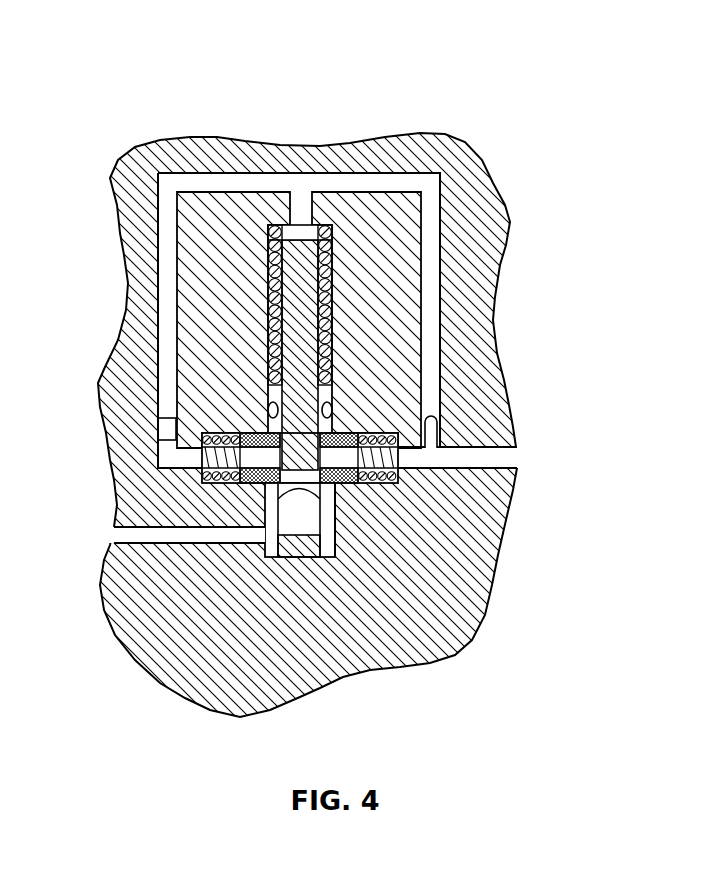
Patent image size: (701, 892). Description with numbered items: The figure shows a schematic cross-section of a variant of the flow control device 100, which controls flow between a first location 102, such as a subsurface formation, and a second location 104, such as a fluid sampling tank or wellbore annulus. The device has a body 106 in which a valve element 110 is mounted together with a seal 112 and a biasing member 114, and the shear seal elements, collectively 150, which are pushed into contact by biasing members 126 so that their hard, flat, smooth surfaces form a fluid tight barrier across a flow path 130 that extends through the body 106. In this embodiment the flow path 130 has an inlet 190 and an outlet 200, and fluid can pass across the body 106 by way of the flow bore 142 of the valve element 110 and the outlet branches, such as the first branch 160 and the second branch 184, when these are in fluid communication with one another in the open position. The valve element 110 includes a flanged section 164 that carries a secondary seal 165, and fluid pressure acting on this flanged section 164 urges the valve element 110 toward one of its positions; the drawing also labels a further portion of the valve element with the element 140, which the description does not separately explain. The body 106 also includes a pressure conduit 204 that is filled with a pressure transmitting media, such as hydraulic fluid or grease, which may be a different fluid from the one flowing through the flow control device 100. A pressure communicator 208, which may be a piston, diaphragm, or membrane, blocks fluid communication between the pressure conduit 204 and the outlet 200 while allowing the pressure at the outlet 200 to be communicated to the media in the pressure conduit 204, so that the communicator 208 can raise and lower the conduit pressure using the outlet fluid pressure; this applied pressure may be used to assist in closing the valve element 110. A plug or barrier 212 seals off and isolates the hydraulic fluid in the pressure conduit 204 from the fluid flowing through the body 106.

The flow control device 100 is at (470, 88).
The first location 102 is at (105, 532).
The second location 104 is at (523, 458).
The body 106 is at (493, 234).
The valve element 110 is at (268, 393).
The seal 112 is at (270, 412).
The biasing member 114 is at (267, 252).
The biasing members 126 is at (378, 436).
The flow path 130 is at (293, 503).
The plunger 140 is at (316, 398).
The flow bore 142 is at (265, 575).
The shear seal elements 150 is at (405, 477).
The first branch 160 is at (425, 460).
The flanged section 164 is at (332, 562).
The secondary seal 165 is at (337, 537).
The second branch 184 is at (255, 180).
The inlet 190 is at (147, 537).
The outlet 200 is at (583, 478).
The pressure conduit 204 is at (350, 185).
The pressure communicator 208 is at (432, 416).
The plug or barrier 212 is at (170, 427).